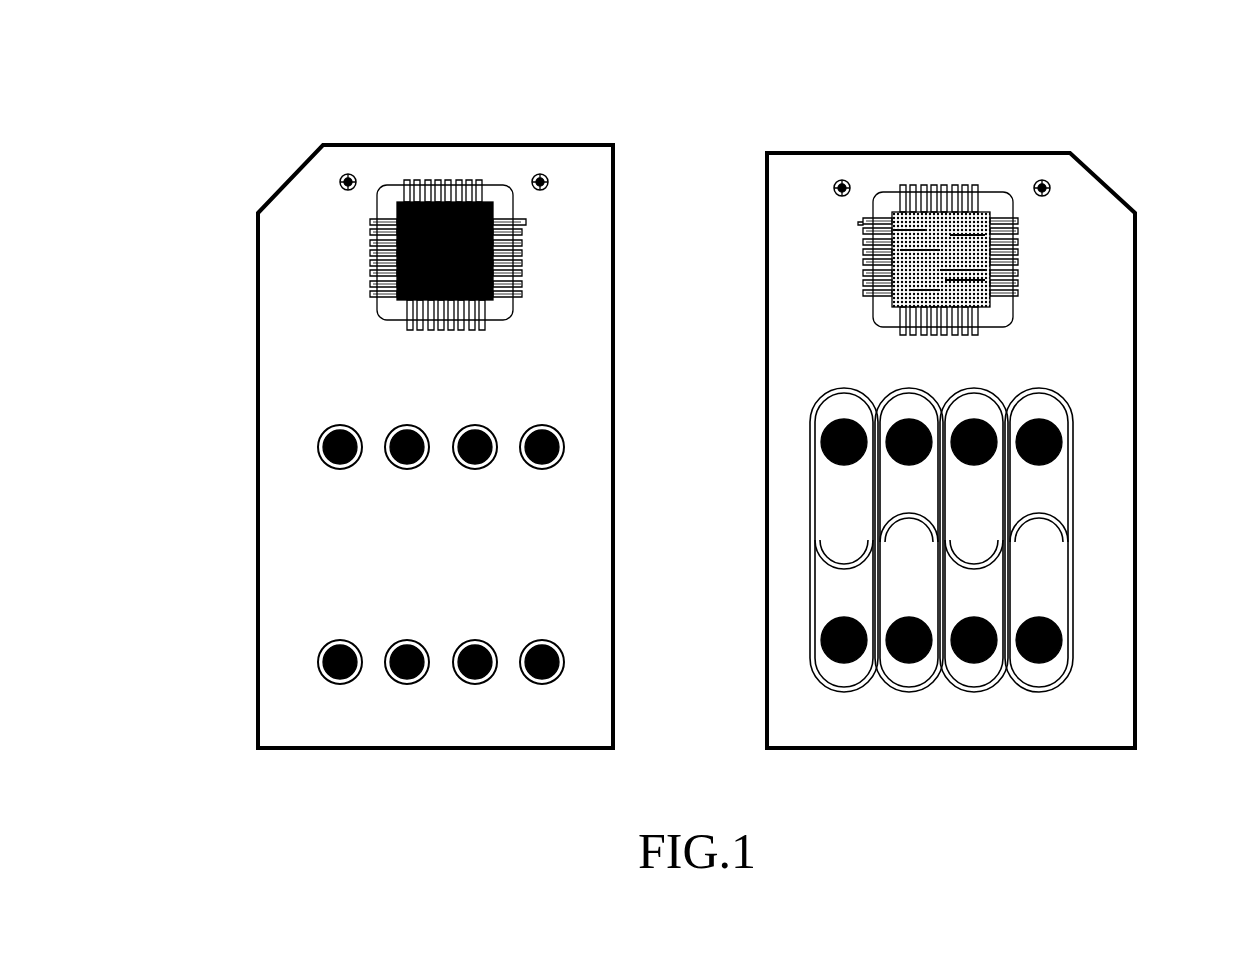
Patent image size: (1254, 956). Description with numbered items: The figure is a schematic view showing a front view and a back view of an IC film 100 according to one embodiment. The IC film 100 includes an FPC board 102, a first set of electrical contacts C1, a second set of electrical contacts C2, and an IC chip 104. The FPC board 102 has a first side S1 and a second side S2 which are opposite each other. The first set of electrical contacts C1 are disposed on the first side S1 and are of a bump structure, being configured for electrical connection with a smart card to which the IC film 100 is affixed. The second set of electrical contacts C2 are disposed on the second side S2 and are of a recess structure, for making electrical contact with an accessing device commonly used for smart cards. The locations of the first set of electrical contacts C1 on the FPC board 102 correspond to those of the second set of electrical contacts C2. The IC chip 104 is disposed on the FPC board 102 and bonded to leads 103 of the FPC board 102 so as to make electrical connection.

The IC film 100 is at (210, 108).
The FPC board 102 is at (258, 460).
The leads 103 is at (371, 275).
The IC chip 104 is at (397, 300).
The first side S1 is at (290, 197).
The second side S2 is at (1095, 203).
The first set of electrical contacts C1 is at (483, 680).
The second set of electrical contacts C2 is at (985, 690).